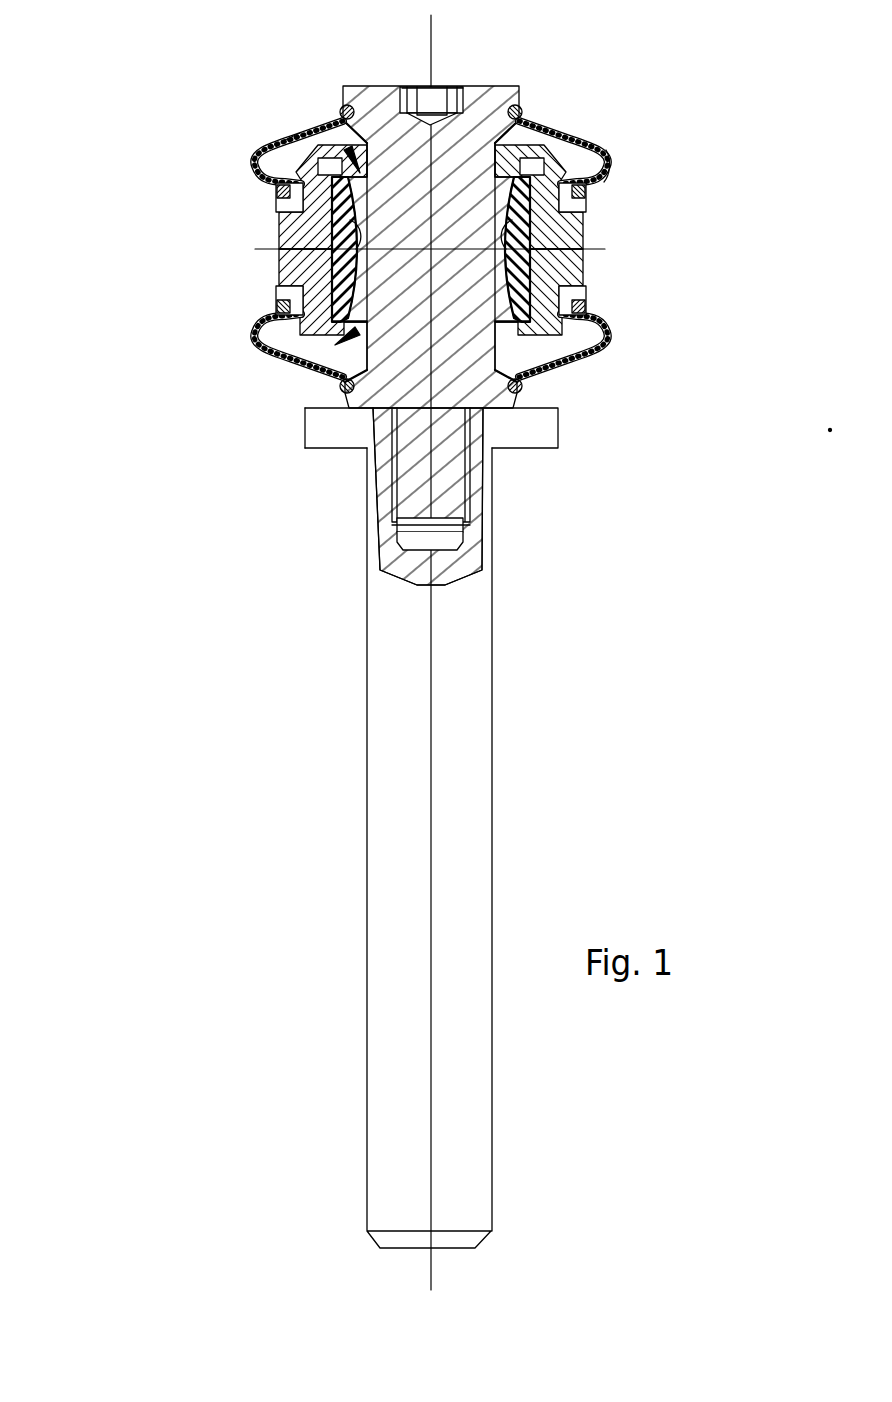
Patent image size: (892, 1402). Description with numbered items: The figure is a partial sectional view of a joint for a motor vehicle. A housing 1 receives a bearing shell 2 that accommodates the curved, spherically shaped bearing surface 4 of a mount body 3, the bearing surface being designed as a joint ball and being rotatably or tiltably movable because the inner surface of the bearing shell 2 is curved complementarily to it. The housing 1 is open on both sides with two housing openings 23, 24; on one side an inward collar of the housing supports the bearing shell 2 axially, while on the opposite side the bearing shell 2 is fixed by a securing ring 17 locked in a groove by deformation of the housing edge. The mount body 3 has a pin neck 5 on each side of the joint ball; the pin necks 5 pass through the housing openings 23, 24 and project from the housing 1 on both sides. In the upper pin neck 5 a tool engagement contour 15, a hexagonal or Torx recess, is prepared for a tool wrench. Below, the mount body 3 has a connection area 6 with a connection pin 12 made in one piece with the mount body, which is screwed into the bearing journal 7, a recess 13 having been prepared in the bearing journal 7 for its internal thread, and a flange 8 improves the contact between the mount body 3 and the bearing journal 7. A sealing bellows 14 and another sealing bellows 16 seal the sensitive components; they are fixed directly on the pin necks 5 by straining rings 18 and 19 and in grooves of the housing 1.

The housing 1 is at (562, 272).
The bearing shell 2 is at (587, 227).
The mount body 3 is at (455, 327).
The bearing surface 4 is at (330, 250).
The pin neck 5 is at (480, 100).
The connection area 6 is at (372, 488).
The bearing journal 7 is at (460, 737).
The flange 8 is at (318, 422).
The connection pin 12 is at (452, 477).
The recess 13 is at (455, 538).
The sealing bellows 14 is at (608, 342).
The tool engagement contour 15 is at (448, 65).
The sealing bellows 16 is at (607, 170).
The securing ring 17 is at (600, 152).
The straining ring 18 is at (343, 100).
The straining ring 19 is at (275, 190).
The housing opening 23 is at (300, 365).
The housing opening 24 is at (300, 132).